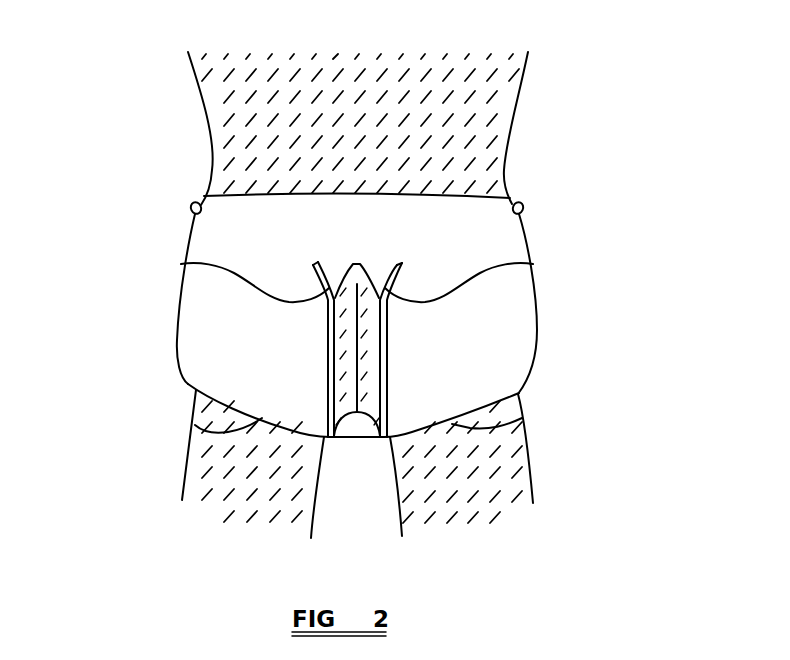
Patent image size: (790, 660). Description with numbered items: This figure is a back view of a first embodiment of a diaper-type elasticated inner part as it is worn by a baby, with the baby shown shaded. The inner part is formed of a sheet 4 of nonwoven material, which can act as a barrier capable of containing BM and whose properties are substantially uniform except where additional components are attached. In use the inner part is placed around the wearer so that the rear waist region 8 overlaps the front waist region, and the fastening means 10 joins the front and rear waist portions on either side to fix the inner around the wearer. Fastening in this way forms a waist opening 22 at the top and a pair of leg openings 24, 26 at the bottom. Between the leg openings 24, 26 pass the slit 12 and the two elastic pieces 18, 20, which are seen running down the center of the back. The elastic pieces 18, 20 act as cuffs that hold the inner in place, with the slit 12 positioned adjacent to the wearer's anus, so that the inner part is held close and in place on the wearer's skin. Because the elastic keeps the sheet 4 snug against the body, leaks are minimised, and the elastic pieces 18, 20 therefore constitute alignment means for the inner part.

The sheet 4 is at (505, 337).
The rear waist region 8 is at (317, 218).
The fastening means 10 is at (525, 208).
The slit 12 is at (351, 438).
The elastic piece 18 is at (181, 264).
The elastic piece 20 is at (533, 264).
The waist opening 22 is at (248, 194).
The leg opening 24 is at (195, 425).
The leg opening 26 is at (522, 418).